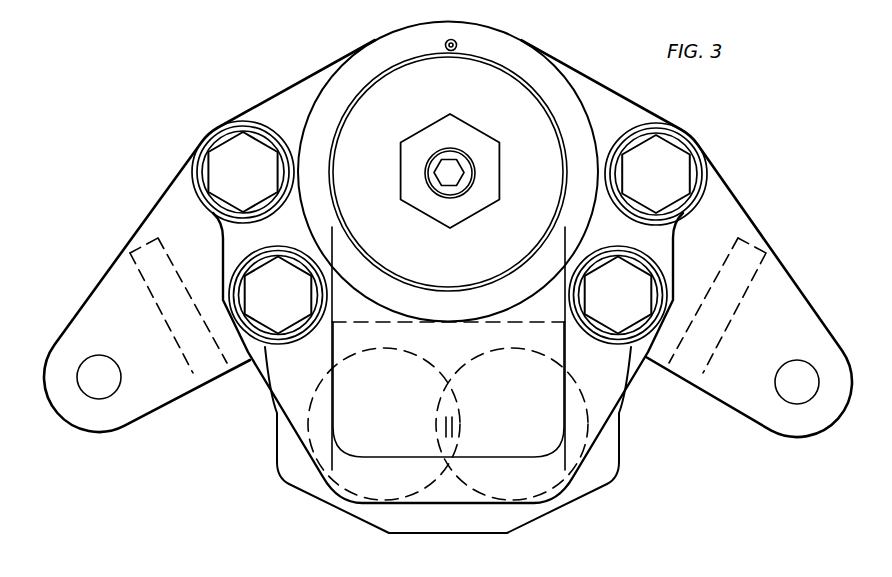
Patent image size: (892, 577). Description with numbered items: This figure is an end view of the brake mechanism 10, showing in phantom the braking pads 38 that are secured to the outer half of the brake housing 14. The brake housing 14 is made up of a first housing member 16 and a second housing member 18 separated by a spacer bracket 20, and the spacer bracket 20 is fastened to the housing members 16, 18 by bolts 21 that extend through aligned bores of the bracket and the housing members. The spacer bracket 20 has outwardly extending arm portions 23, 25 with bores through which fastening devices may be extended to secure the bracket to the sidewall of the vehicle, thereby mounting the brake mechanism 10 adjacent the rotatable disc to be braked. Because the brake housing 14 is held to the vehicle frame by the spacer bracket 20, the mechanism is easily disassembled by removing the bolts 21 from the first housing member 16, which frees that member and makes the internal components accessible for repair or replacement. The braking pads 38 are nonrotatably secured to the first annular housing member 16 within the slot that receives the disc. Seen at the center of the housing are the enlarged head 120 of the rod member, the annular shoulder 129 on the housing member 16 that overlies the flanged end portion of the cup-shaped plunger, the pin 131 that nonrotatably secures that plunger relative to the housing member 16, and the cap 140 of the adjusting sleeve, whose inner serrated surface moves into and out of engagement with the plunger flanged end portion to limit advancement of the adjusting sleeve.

The brake mechanism 10 is at (232, 82).
The brake housing 14 is at (601, 68).
The first housing member 16 is at (585, 475).
The second housing member 18 is at (430, 440).
The spacer bracket 20 is at (156, 195).
The bolts 21 is at (224, 153).
The arm portion 23 is at (122, 432).
The arm portion 25 is at (813, 437).
The braking pads 38 is at (448, 422).
The enlarged head 120 is at (462, 172).
The annular shoulder 129 is at (480, 265).
The pin 131 is at (455, 37).
The cap 140 is at (421, 134).